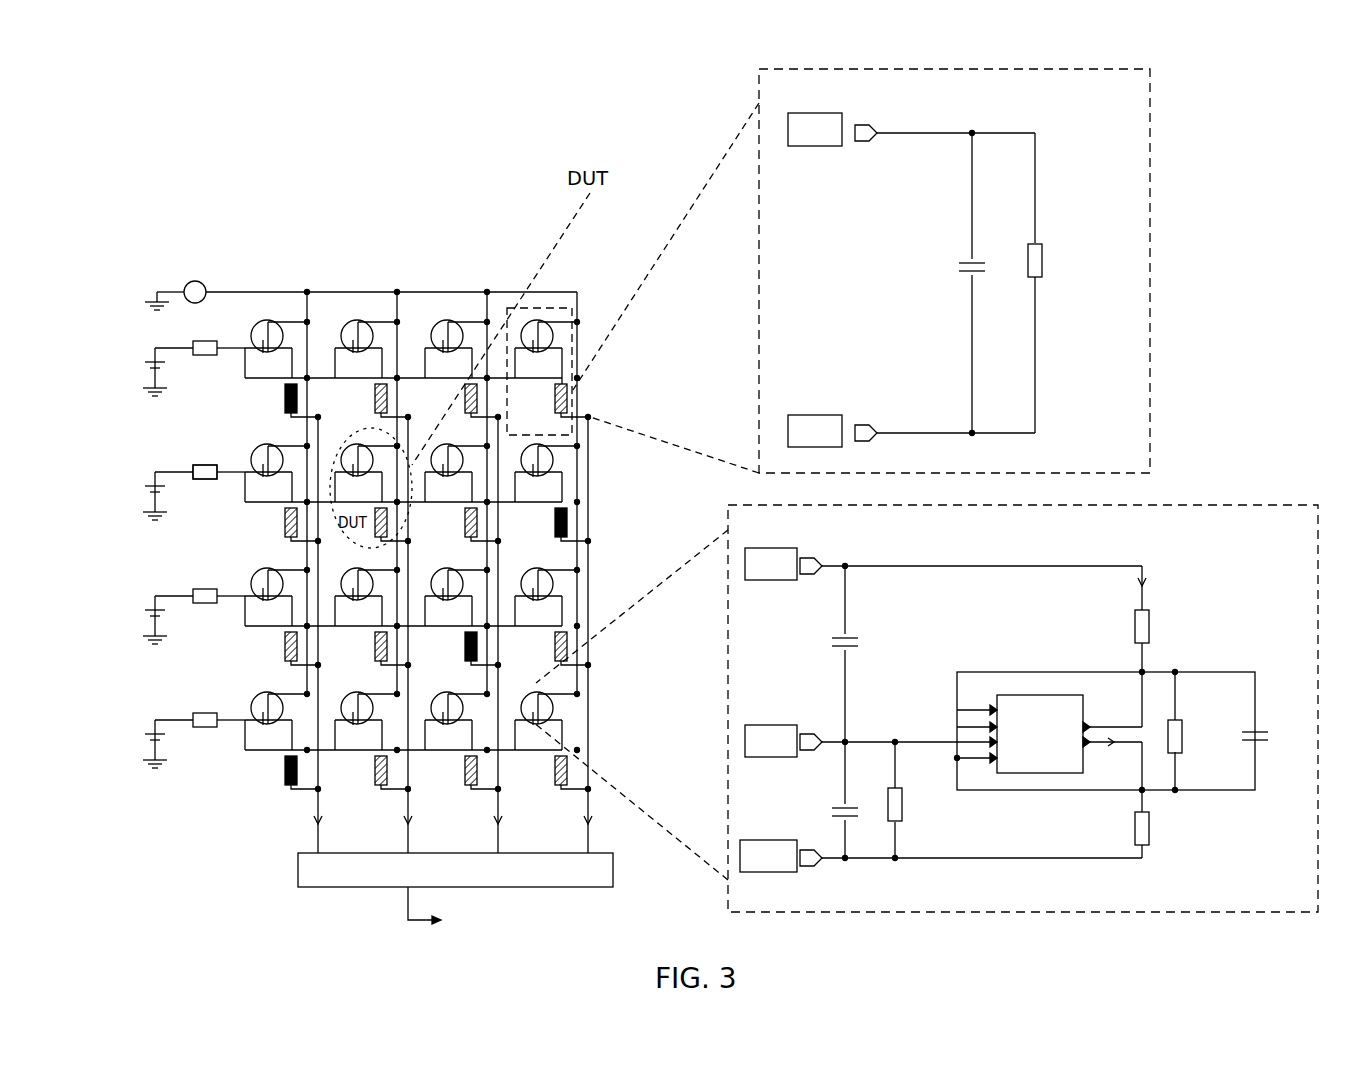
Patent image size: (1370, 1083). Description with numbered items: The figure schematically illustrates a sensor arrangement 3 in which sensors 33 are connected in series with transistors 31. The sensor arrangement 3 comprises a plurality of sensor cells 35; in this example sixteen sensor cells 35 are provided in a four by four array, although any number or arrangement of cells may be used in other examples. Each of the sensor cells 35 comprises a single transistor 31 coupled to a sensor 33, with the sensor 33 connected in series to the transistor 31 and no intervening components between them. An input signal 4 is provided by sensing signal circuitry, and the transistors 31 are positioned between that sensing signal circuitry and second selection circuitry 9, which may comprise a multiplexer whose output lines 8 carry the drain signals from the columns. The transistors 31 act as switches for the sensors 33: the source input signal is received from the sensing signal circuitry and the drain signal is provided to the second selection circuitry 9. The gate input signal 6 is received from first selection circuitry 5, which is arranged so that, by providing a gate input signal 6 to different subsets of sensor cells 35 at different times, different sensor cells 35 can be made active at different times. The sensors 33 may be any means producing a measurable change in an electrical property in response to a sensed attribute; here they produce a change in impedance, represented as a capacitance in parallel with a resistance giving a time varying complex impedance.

The sensor arrangement 3 is at (578, 291).
The input signal 4 is at (357, 262).
The first selection circuitry 5 is at (110, 760).
The gate input signal 6 is at (209, 456).
The column readout lines 8 is at (464, 635).
The second selection circuitry 9 is at (320, 887).
The transistor 31 is at (536, 319).
The sensor 33 is at (580, 397).
The sensor cell 35 is at (575, 382).